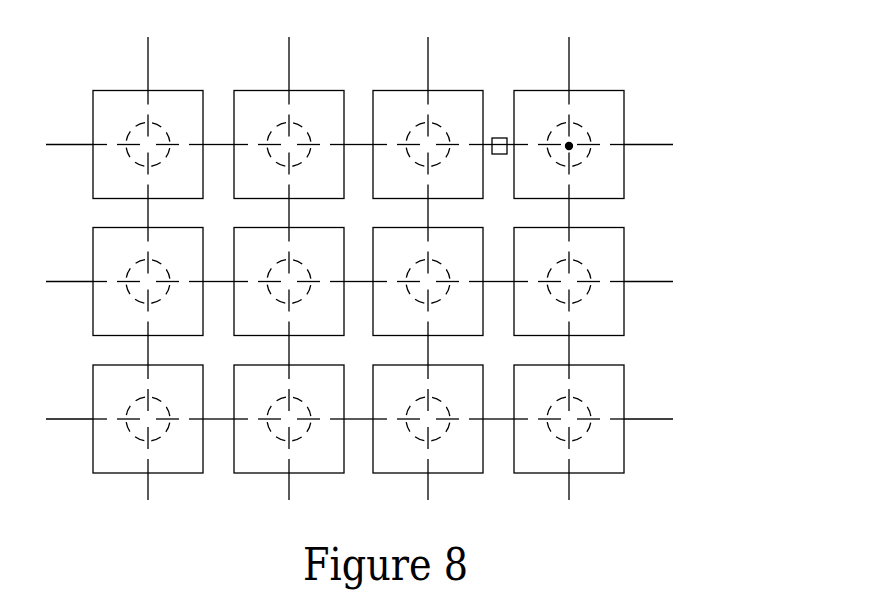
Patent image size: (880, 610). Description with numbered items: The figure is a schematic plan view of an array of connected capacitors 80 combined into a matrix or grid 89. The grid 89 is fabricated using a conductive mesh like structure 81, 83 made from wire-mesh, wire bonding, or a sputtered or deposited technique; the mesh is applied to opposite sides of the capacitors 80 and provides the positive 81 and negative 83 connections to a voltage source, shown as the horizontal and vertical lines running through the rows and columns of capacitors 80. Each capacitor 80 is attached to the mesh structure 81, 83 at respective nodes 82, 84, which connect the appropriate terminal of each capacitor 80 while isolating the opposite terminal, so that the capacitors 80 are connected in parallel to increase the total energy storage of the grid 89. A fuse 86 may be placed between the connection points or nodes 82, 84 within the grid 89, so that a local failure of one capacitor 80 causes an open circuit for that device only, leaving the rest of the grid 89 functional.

The capacitor 80 is at (613, 110).
The positive connection of the conductive mesh structure 81 is at (653, 148).
The node 82 is at (573, 145).
The negative connection of the conductive mesh structure 83 is at (572, 57).
The node 84 is at (579, 128).
The fuse 86 is at (500, 138).
The grid 89 is at (419, 252).